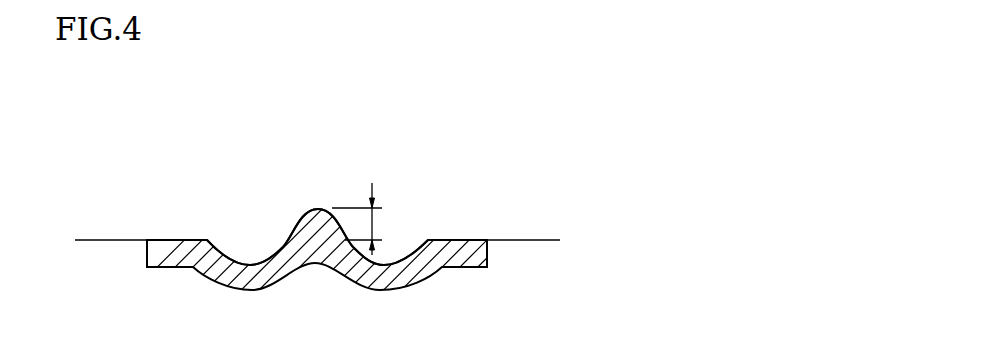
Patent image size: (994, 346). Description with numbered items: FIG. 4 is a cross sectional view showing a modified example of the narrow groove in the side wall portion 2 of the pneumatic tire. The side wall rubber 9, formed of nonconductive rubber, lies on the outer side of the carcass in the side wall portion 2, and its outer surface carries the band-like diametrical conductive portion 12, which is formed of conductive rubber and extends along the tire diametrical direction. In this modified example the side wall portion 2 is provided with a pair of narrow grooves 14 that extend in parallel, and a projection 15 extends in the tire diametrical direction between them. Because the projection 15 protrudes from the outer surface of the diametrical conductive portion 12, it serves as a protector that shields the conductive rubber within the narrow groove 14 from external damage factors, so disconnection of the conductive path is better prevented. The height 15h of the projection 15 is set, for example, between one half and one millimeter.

The side wall portion 2 is at (543, 201).
The side wall rubber 9 is at (513, 248).
The diametrical conductive portion 12 is at (177, 240).
The narrow groove 14 is at (242, 250).
The projection 15 is at (307, 211).
The height of the projection 15h is at (373, 226).